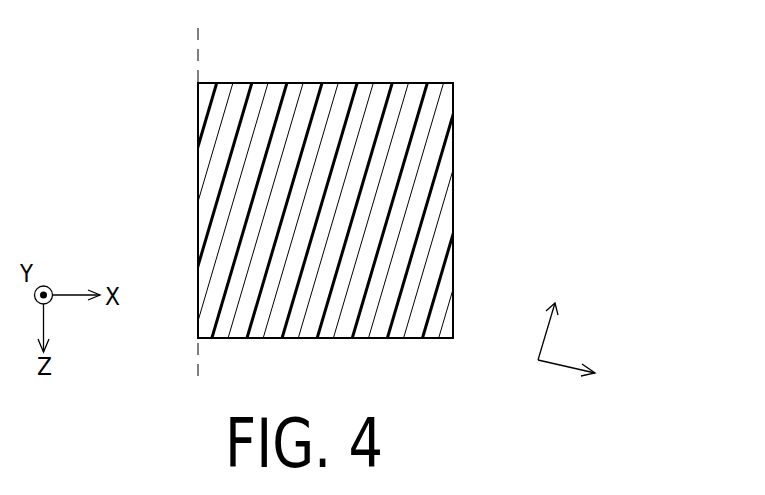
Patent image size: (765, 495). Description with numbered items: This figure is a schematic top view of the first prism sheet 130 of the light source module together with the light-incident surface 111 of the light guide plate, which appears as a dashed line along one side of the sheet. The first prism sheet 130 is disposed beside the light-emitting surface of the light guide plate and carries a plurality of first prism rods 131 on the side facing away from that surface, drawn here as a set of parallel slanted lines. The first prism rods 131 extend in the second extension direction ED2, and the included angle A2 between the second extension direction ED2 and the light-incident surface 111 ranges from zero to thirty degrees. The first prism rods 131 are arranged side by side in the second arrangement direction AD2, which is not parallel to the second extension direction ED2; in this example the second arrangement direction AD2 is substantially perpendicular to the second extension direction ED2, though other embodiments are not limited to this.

The light-incident surface 111 is at (199, 50).
The first prism sheet 130 is at (347, 83).
The first prism rods 131 is at (445, 155).
The included angle A2 is at (201, 99).
The second extension direction ED2 is at (556, 318).
The second arrangement direction AD2 is at (587, 376).